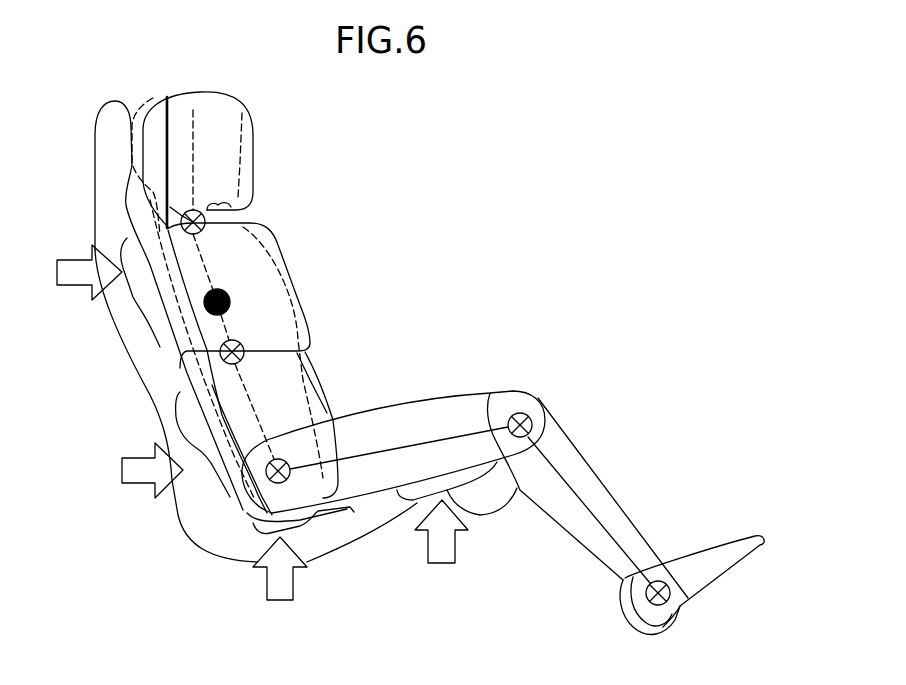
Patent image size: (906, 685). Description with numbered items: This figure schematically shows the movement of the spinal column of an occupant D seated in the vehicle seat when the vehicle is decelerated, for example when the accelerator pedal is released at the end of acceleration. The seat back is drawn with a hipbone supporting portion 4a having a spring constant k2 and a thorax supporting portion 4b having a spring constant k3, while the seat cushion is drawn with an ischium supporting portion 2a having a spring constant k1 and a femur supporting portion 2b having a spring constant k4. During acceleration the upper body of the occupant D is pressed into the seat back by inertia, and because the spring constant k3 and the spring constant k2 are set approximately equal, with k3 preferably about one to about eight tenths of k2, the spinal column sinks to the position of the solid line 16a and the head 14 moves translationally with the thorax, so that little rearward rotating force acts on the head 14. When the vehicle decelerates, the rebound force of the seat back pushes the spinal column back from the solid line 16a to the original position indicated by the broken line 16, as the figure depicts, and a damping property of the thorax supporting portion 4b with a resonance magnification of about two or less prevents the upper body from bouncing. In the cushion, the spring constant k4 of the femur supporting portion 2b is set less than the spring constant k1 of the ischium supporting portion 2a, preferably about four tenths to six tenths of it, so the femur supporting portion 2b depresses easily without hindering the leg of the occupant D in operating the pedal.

The head 14 is at (153, 98).
The broken line (spinal column position) 16 is at (196, 110).
The solid line (spinal column position) 16a is at (168, 97).
The hipbone supporting portion 4a is at (163, 423).
The thorax supporting portion 4b is at (128, 300).
The ischium supporting portion 2a is at (307, 527).
The femur supporting portion 2b is at (473, 513).
The spring constant of ischium supporting portion k1 is at (267, 583).
The spring constant of hipbone supporting portion k2 is at (133, 486).
The spring constant of thorax supporting portion k3 is at (60, 258).
The spring constant of femur supporting portion k4 is at (427, 550).
The occupant D is at (378, 173).